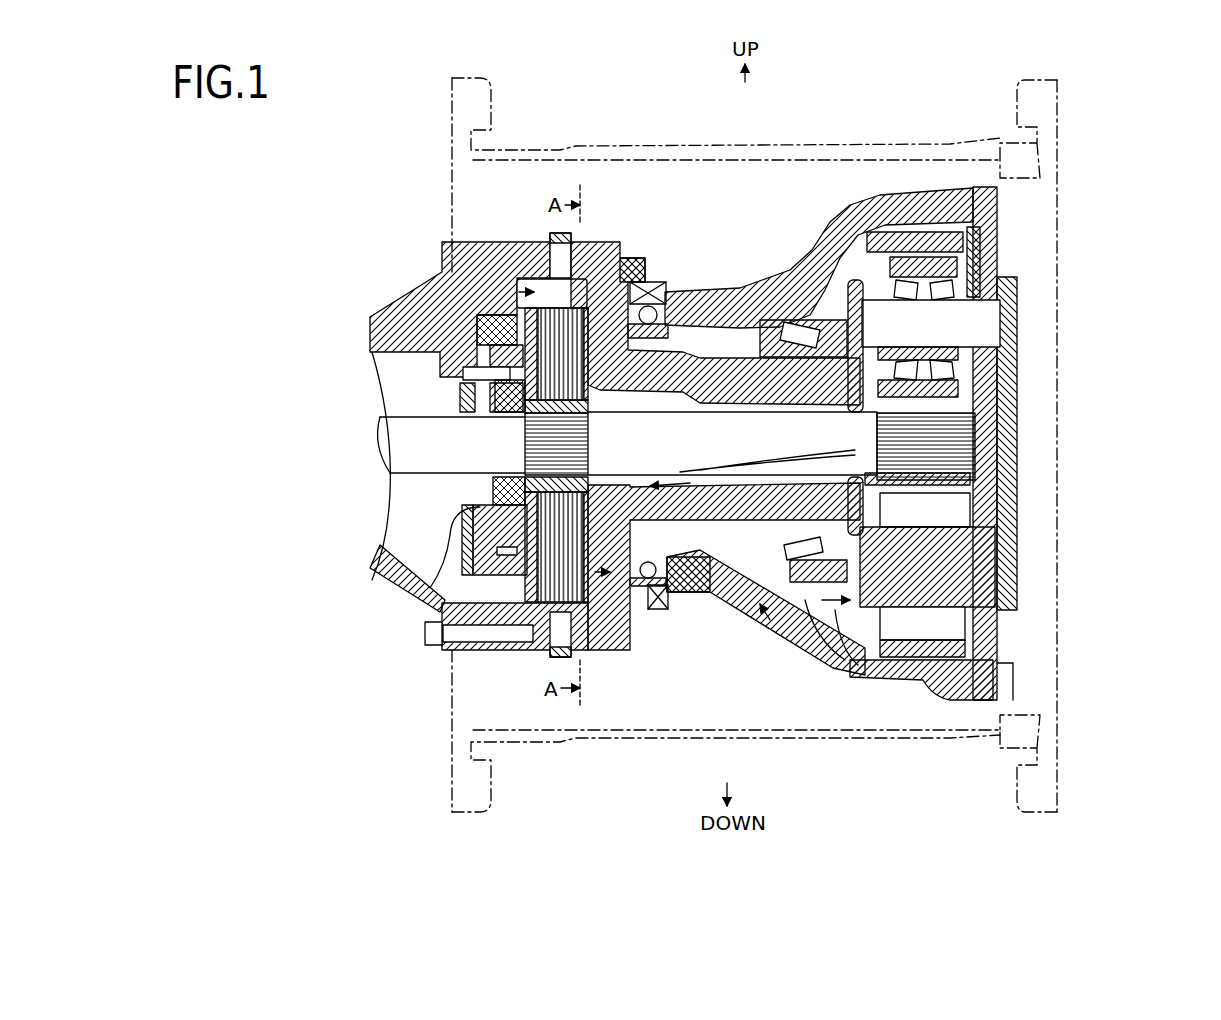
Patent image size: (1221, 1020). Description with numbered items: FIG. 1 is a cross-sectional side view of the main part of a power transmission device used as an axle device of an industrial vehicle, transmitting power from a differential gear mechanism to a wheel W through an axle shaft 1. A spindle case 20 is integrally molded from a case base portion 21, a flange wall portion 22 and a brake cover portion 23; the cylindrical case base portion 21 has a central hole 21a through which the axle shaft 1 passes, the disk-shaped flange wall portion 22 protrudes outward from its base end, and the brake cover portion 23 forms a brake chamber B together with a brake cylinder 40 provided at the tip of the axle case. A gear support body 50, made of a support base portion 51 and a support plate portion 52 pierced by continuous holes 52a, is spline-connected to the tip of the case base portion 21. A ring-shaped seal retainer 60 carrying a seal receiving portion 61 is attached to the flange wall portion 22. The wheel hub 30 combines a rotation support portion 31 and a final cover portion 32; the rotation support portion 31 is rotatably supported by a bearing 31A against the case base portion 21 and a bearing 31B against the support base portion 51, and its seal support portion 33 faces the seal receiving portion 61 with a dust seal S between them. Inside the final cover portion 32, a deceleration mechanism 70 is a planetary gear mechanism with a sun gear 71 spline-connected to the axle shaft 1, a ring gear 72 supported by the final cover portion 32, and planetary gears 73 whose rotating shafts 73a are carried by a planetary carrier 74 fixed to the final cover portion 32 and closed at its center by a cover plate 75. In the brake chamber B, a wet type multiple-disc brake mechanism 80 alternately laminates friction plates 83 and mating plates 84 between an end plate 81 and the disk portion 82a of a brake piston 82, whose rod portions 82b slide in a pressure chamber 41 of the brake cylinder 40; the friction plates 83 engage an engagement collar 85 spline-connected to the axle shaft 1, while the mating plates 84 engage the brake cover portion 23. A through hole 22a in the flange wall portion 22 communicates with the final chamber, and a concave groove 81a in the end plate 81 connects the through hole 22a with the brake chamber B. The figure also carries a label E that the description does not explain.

The axle shaft 1 is at (395, 430).
The spindle case 20 is at (700, 78).
The case base portion 21 is at (718, 290).
The central hole 21a is at (742, 395).
The flange wall portion 22 is at (612, 262).
The through hole 22a is at (640, 612).
The brake cover portion 23 is at (545, 262).
The wheel hub 30 is at (860, 100).
The rotation support portion 31 is at (790, 330).
The bearing 31A is at (678, 600).
The bearing 31B is at (772, 580).
The final cover portion 32 is at (862, 248).
The seal support portion 33 is at (652, 612).
The brake cylinder 40 is at (475, 330).
The pressure chamber 41 is at (515, 296).
The gear support body 50 is at (845, 785).
The support base portion 51 is at (812, 600).
The support plate portion 52 is at (840, 612).
The continuous holes 52a is at (840, 650).
The seal retainer 60 is at (618, 262).
The seal receiving portion 61 is at (650, 285).
The deceleration mechanism 70 is at (1158, 340).
The sun gear 71 is at (980, 465).
The ring gear 72 is at (935, 605).
The planetary gears 73 is at (972, 385).
The rotating shaft 73a is at (990, 345).
The planetary carrier 74 is at (1012, 330).
The cover plate 75 is at (1000, 568).
The brake mechanism 80 is at (252, 470).
The end plate 81 is at (535, 450).
The concave groove 81a is at (643, 482).
The brake piston 82 is at (292, 507).
The disk portion 82a is at (470, 362).
The rod portions 82b is at (480, 538).
The friction plates 83 is at (520, 496).
The mating plates 84 is at (430, 590).
The engagement collar 85 is at (525, 425).
The brake chamber B is at (447, 292).
The dust seal S is at (655, 320).
The oil flow direction E is at (738, 640).
The wheel W is at (940, 742).